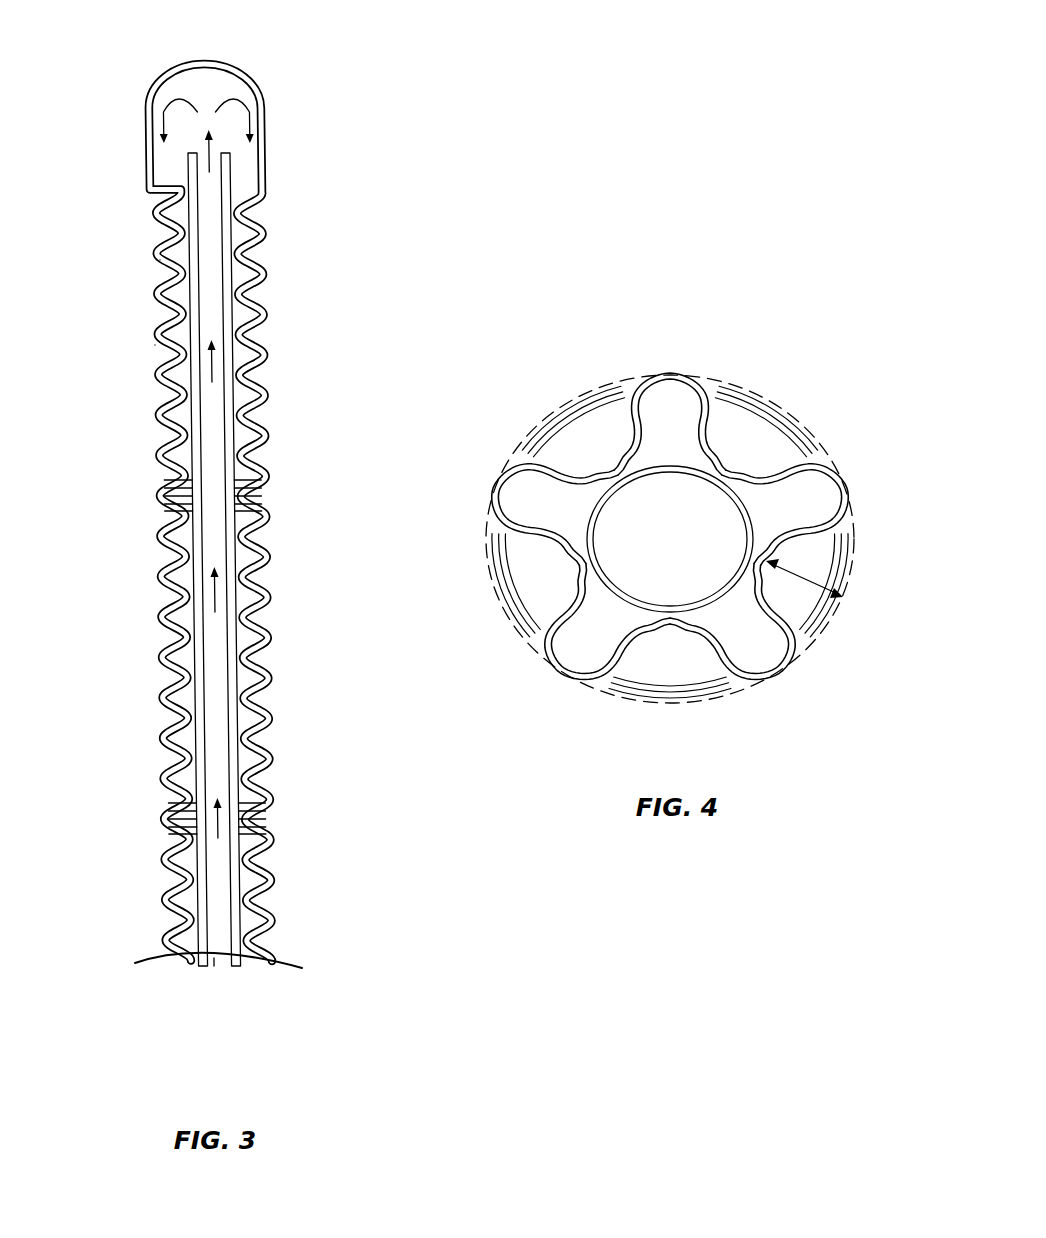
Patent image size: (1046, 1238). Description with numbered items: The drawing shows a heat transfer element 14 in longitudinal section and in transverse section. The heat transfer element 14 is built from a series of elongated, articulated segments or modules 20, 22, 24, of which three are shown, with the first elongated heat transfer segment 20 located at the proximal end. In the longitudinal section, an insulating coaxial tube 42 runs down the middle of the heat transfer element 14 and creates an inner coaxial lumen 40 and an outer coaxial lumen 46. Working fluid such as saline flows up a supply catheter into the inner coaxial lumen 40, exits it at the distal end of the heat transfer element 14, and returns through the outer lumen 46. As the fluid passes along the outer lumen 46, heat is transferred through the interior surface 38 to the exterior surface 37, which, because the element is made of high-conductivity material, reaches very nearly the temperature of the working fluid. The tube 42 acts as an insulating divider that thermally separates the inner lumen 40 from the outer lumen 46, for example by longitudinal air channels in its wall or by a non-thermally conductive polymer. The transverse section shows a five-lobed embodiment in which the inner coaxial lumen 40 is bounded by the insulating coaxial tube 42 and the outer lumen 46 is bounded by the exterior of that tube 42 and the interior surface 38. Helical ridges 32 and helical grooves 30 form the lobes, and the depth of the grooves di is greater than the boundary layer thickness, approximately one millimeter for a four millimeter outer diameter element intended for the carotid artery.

In FIG. 3, the heat transfer element 14 is at (322, 80).
In FIG. 3, the first elongated heat transfer segment 20 is at (112, 878).
In FIG. 3, the heat transfer segment 22 is at (112, 649).
In FIG. 3, the heat transfer segment 24 is at (105, 342).
In FIG. 4, the helical grooves 30 is at (570, 553).
In FIG. 4, the helical ridges 32 is at (612, 412).
In FIG. 3, the exterior surface 37 is at (158, 218).
In FIG. 3, the interior surface 38 is at (166, 274).
In FIG. 4, the interior surface 38 is at (851, 495).
In FIG. 3, the inner coaxial lumen 40 is at (222, 962).
In FIG. 4, the inner coaxial lumen 40 is at (656, 553).
In FIG. 3, the insulating coaxial tube 42 is at (224, 152).
In FIG. 4, the insulating coaxial tube 42 is at (713, 484).
In FIG. 3, the outer coaxial lumen 46 is at (193, 953).
In FIG. 4, the outer coaxial lumen 46 is at (527, 519).
In FIG. 4, the depth of the grooves di is at (843, 581).